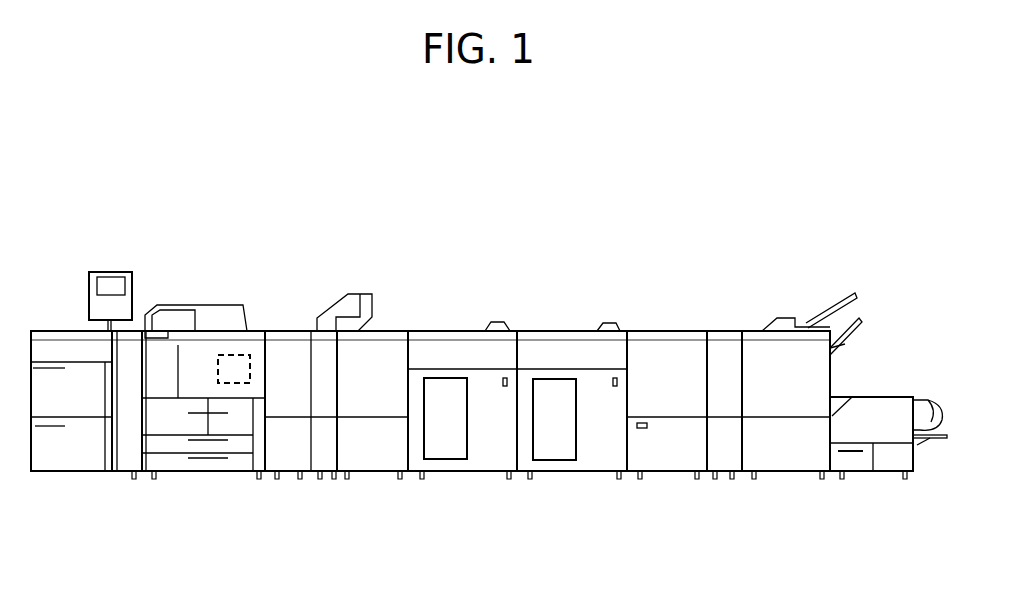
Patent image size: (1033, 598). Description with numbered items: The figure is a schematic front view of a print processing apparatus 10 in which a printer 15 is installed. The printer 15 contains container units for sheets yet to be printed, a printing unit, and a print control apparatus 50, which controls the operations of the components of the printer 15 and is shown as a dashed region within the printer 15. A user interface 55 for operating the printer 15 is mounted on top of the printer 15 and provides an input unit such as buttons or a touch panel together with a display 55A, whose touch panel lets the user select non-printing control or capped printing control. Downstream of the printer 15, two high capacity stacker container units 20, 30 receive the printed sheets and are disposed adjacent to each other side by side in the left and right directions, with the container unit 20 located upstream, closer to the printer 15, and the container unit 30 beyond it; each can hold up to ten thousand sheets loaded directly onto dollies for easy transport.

The print processing apparatus 10 is at (498, 177).
The printer 15 is at (238, 257).
The container unit 20 is at (462, 352).
The container unit 30 is at (543, 352).
The print control apparatus 50 is at (246, 356).
The user interface 55 is at (110, 301).
The display 55A is at (110, 280).